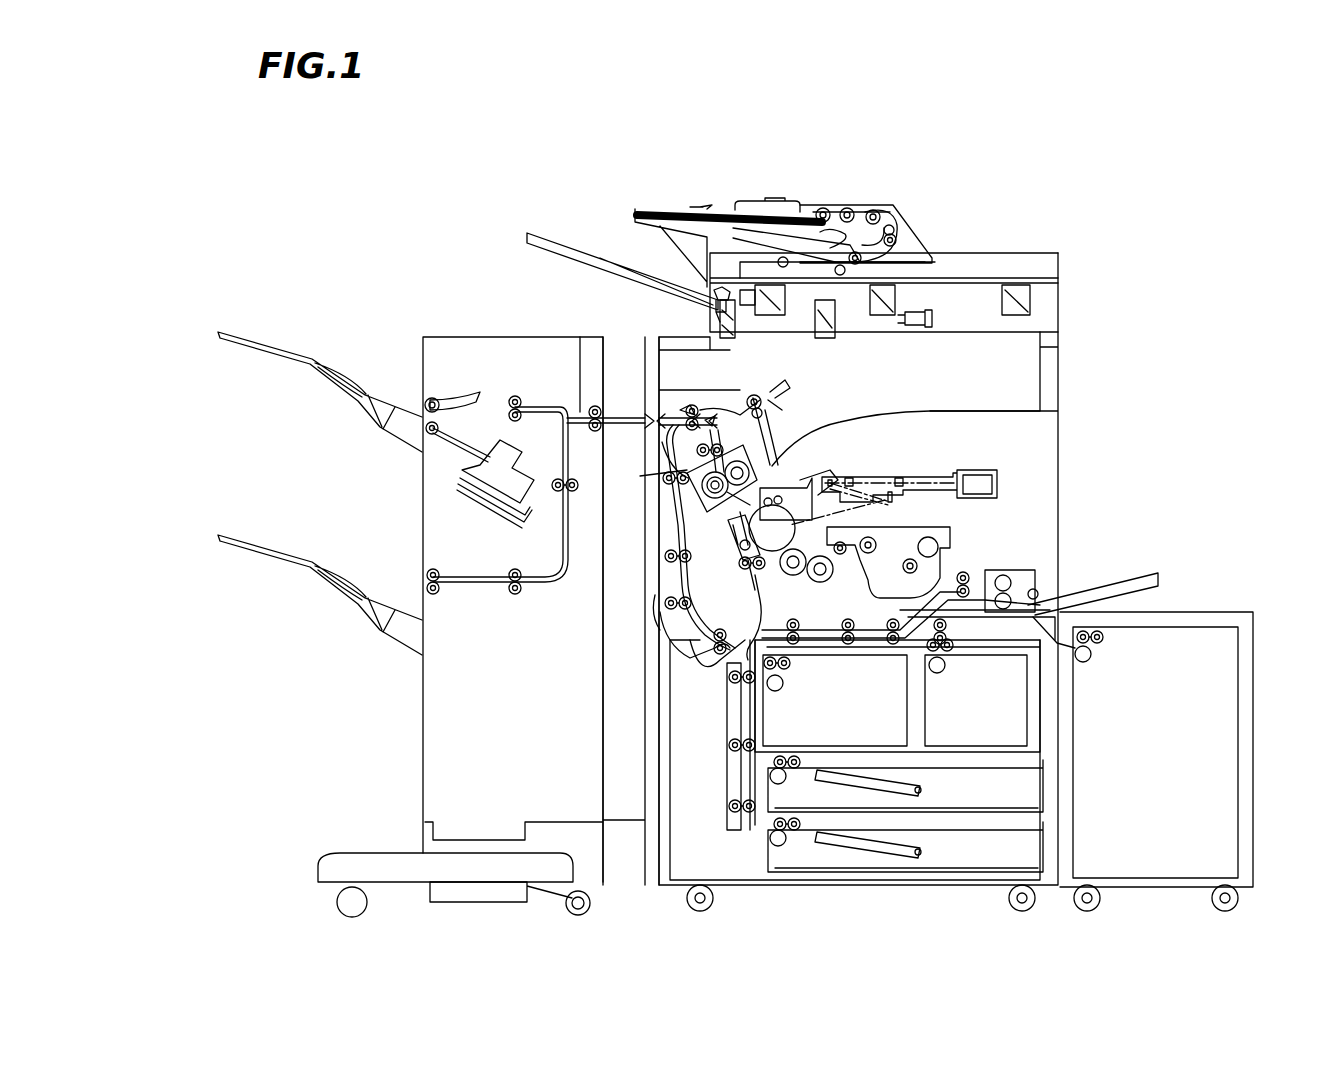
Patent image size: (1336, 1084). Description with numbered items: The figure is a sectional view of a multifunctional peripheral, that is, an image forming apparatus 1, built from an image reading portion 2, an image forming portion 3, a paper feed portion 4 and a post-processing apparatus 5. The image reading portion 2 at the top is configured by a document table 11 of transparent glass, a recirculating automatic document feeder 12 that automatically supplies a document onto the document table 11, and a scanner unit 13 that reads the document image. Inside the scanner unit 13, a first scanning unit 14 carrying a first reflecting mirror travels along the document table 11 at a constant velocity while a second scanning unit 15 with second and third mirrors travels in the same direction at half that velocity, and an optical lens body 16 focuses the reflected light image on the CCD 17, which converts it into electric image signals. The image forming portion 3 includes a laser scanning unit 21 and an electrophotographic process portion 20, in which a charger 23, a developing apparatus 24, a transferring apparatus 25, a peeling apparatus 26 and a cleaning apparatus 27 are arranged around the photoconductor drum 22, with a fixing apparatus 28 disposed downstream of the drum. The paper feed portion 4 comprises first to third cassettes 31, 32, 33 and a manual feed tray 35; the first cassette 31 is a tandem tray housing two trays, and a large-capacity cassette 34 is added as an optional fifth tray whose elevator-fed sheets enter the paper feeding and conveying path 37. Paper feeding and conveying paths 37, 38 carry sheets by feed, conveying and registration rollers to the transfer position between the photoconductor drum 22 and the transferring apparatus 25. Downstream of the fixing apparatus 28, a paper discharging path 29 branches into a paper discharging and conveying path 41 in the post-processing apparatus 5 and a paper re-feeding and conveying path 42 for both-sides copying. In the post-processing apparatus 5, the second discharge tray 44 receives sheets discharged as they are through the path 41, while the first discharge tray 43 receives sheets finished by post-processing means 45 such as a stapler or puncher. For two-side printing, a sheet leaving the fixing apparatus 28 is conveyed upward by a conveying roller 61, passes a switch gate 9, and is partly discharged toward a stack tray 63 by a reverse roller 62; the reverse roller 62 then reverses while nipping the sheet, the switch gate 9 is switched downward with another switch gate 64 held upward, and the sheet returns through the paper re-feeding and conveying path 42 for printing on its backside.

The multifunctional peripheral (image forming apparatus) 1 is at (1043, 141).
The image reading portion 2 is at (933, 218).
The image forming portion 3 is at (1085, 446).
The paper feed portion 4 is at (1203, 595).
The post-processing apparatus 5 is at (486, 314).
The switch gate 9 is at (665, 455).
The document table 11 is at (965, 275).
The recirculating automatic document feeder (RADF) 12 is at (755, 210).
The scanner unit 13 is at (1045, 305).
The first scanning unit 14 is at (780, 325).
The second scanning unit 15 is at (730, 320).
The optical lens body 16 is at (903, 322).
The Charge Coupled Device (CCD) 17 is at (933, 320).
The electrophotographic process portion 20 is at (955, 548).
The laser scanning unit (LSU) 21 is at (893, 472).
The photoconductor drum 22 is at (775, 545).
The charger 23 is at (812, 478).
The developing apparatus 24 is at (850, 590).
The transferring apparatus 25 is at (733, 550).
The peeling apparatus 26 is at (740, 512).
The cleaning apparatus 27 is at (772, 462).
The fixing apparatus 28 is at (690, 528).
The paper discharging path 29 is at (720, 408).
The first cassette 31 is at (1030, 688).
The second cassette 32 is at (1045, 786).
The third cassette 33 is at (1045, 841).
The large-capacity cassette 34 is at (1215, 730).
The manual feed tray 35 is at (1093, 580).
The paper feeding and conveying path 37 is at (820, 640).
The paper feeding and conveying path 38 is at (725, 705).
The paper discharging and conveying path 41 is at (615, 412).
The paper re-feeding and conveying path 42 is at (698, 602).
The first discharge tray 43 is at (287, 345).
The second discharge tray 44 is at (287, 550).
The post-processing means 45 is at (460, 470).
The conveying roller 61 is at (668, 476).
The reverse roller 62 is at (765, 395).
The stack tray 63 is at (897, 410).
The switch gate 64 is at (663, 432).